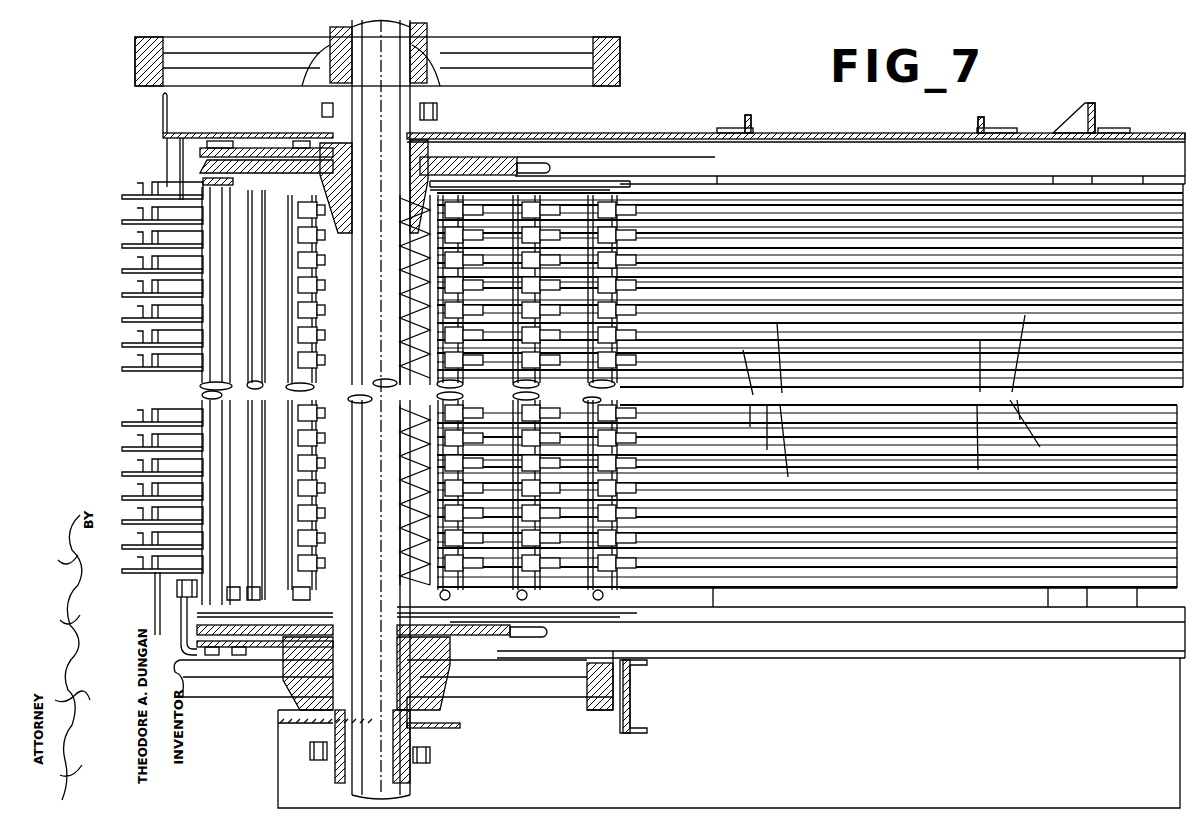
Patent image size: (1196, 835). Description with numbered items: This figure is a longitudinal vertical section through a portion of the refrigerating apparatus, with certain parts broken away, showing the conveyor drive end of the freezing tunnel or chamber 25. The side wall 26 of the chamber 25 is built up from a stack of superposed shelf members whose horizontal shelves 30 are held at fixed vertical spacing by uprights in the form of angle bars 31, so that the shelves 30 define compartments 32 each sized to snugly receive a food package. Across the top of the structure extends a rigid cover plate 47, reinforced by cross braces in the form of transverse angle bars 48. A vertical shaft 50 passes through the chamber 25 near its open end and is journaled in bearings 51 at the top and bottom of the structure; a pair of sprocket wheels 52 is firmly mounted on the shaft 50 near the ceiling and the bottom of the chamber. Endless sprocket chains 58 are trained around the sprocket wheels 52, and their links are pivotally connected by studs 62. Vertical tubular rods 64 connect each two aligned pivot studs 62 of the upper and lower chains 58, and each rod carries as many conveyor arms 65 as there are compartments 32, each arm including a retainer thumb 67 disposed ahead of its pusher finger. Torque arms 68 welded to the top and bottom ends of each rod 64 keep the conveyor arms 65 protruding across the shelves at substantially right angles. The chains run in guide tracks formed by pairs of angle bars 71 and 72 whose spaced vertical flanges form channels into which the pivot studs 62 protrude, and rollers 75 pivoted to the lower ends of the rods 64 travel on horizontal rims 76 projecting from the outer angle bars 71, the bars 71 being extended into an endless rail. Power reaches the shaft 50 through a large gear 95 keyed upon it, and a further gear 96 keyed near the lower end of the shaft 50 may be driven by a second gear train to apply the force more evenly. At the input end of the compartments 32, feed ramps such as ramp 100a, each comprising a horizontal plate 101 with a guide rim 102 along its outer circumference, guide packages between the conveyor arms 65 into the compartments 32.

The freezing tunnel or chamber 25 is at (925, 228).
The side wall 26 is at (966, 588).
The horizontal shelf 30 is at (765, 400).
The angle bar upright 31 is at (1075, 123).
The compartment 32 is at (1008, 392).
The cover plate 47 is at (653, 133).
The transverse angle bar 48 is at (1098, 120).
The shaft 50 is at (372, 91).
The bearing 51 is at (430, 122).
The sprocket wheel 52 is at (552, 168).
The sprocket chain 58 is at (610, 187).
The pivot stud 62 is at (217, 147).
The vertical rod 64 is at (200, 393).
The conveyor arm 65 is at (453, 413).
The retainer thumb 67 is at (623, 563).
The torque arm 68 is at (640, 193).
The angle bar 71 is at (180, 663).
The angle bar 72 is at (872, 174).
The roller 75 is at (177, 588).
The horizontal rim 76 is at (181, 632).
The gear 95 is at (140, 60).
The gear 96 is at (610, 702).
The feed ramp 100a is at (125, 367).
The horizontal plate 101 is at (125, 244).
The guide rim 102 is at (125, 293).